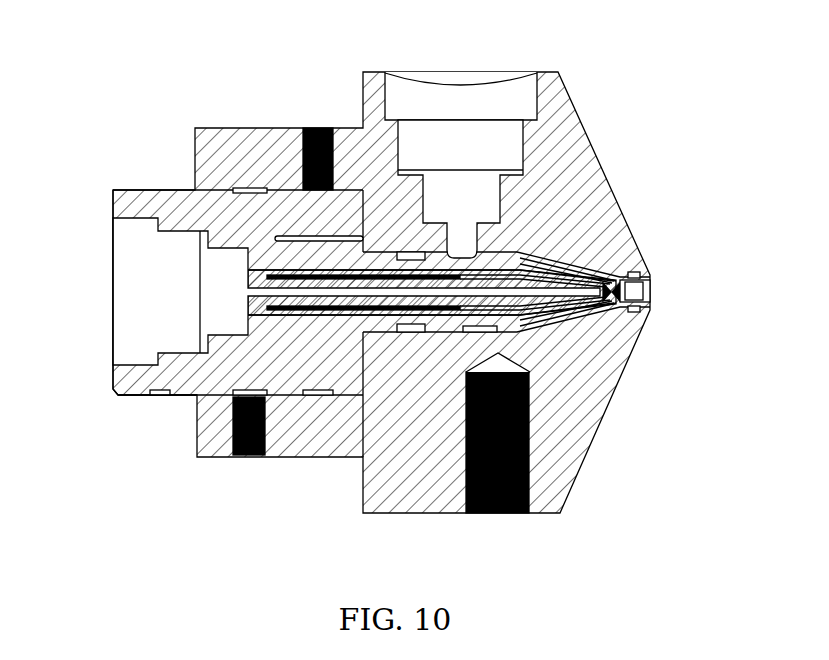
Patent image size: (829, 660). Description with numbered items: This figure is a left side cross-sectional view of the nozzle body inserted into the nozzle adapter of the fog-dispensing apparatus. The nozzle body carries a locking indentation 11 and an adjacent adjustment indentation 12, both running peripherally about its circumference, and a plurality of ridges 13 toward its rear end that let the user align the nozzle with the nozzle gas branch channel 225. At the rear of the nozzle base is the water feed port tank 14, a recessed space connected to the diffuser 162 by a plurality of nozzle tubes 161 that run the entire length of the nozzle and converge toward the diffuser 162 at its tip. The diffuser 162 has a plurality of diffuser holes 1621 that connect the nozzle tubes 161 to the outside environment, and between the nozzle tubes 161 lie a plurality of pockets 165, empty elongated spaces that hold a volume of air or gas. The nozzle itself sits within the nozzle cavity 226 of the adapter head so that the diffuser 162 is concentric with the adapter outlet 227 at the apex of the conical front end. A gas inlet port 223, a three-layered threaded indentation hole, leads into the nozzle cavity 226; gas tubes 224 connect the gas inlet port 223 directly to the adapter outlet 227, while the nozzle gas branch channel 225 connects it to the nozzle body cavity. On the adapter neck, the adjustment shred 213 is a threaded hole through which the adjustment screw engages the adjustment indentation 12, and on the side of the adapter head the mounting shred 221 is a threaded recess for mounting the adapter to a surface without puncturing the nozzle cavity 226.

The locking indentation 11 is at (247, 187).
The adjustment indentation 12 is at (292, 236).
The plurality of ridges 13 is at (118, 191).
The water feed port tank 14 is at (113, 288).
The plurality of nozzle tubes 161 is at (258, 290).
The diffuser 162 is at (647, 296).
The plurality of diffuser holes 1621 is at (640, 275).
The plurality of pockets 165 is at (283, 282).
The adjustment shred 213 is at (317, 128).
The mounting shred 221 is at (497, 513).
The gas inlet port 223 is at (462, 84).
The gas tubes 224 is at (592, 262).
The nozzle gas branch channel 225 is at (420, 254).
The nozzle cavity 226 is at (403, 256).
The adapter outlet 227 is at (650, 291).